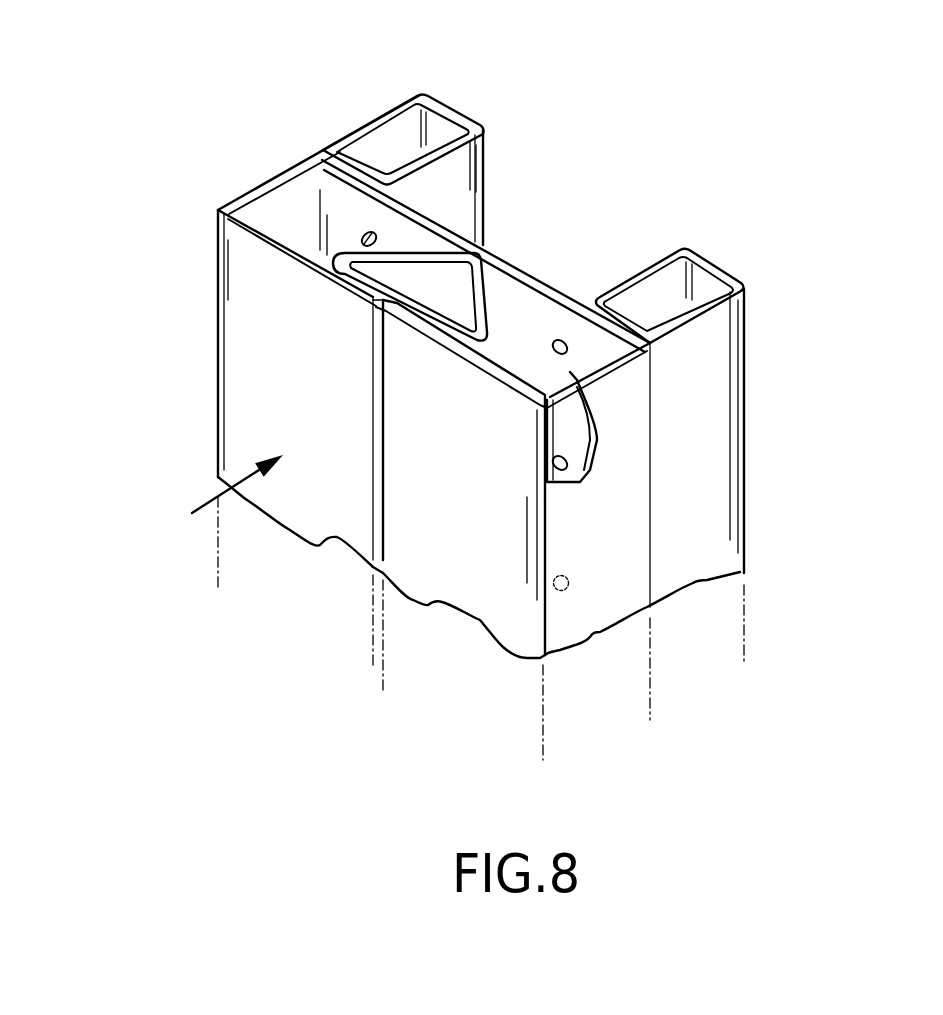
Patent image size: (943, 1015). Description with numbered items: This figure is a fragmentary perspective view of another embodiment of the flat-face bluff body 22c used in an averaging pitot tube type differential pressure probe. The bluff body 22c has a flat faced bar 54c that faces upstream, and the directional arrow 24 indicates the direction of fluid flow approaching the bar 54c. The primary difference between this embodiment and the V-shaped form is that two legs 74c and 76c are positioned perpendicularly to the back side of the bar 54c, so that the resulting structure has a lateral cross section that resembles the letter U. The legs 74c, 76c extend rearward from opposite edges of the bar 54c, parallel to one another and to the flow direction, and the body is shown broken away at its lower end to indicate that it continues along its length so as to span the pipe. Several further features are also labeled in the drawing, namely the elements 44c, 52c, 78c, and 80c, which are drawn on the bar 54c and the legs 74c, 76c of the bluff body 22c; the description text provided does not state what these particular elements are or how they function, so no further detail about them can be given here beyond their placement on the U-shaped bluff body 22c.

The bluff body 22c is at (121, 91).
The directional arrow 24 is at (200, 502).
The opening 44c is at (353, 193).
The retaining tab 52c is at (361, 236).
The bar 54c is at (255, 160).
The leg 74c is at (372, 120).
The leg 76c is at (743, 292).
The front wall 78c is at (217, 298).
The intermediate wall 80c is at (545, 640).